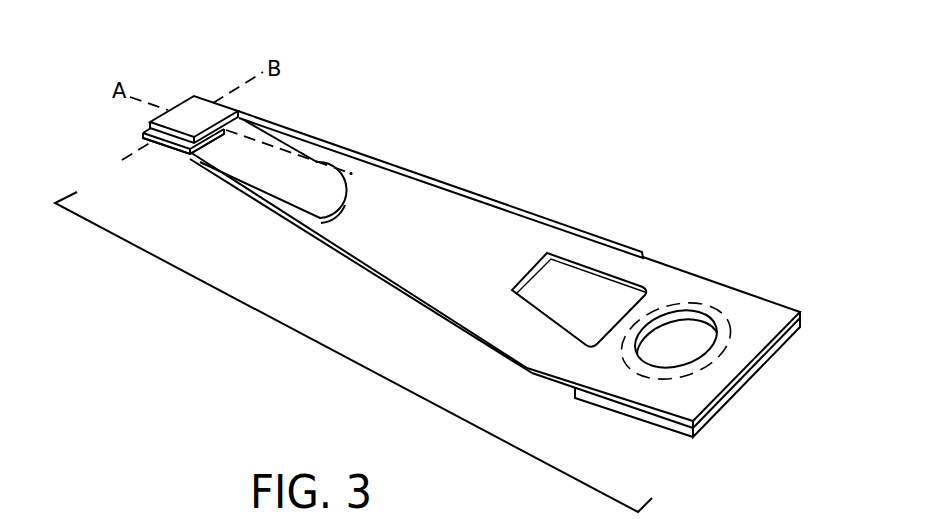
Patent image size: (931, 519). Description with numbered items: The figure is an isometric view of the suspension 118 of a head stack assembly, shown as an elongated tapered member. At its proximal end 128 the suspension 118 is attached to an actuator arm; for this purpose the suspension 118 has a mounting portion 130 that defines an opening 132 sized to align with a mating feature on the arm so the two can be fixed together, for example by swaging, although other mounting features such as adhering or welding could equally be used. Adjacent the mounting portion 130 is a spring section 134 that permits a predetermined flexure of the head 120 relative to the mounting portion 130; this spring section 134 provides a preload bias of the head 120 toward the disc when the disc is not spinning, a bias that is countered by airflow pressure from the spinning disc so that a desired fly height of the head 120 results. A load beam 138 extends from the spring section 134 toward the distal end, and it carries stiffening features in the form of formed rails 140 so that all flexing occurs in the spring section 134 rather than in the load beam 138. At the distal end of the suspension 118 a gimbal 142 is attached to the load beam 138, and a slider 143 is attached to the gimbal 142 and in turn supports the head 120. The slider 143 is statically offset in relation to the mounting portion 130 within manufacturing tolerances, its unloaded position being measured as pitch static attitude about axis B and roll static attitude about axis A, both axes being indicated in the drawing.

The suspension 118 is at (302, 334).
The head 120 is at (198, 113).
The proximal end 128 is at (758, 373).
The mounting portion 130 is at (730, 310).
The opening 132 is at (665, 357).
The spring section 134 is at (566, 358).
The load beam 138 is at (397, 243).
The formed rails 140 is at (377, 162).
The gimbal 142 is at (170, 143).
The slider 143 is at (182, 107).